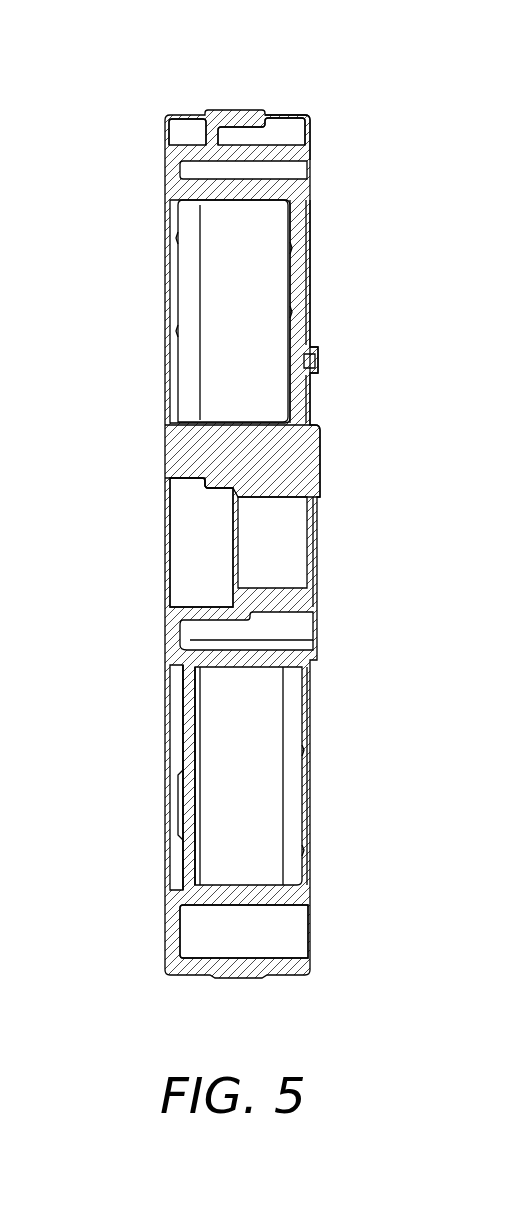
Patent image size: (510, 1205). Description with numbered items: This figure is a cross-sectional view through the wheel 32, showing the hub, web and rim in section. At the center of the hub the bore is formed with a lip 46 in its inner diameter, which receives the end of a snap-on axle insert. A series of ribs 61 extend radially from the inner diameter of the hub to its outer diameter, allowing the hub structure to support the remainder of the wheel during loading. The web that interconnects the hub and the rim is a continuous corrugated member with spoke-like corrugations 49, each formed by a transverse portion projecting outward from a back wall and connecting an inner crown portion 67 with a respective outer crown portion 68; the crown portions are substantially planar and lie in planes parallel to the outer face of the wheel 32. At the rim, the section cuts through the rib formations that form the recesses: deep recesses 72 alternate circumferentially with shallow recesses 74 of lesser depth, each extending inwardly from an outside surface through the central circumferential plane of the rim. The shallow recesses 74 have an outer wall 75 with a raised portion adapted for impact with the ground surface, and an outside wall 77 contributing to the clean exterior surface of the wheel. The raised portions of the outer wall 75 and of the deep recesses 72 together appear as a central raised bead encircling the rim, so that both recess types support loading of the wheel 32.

The wheel 32 is at (342, 94).
The outside wall 77 is at (205, 134).
The outer wall 75 is at (243, 133).
The shallow recess 74 is at (265, 136).
The corrugation 49 is at (310, 331).
The inner crown portion 67 is at (300, 396).
The rib 61 is at (270, 458).
The lip 46 is at (218, 488).
The outer crown portion 68 is at (183, 868).
The deep recess 72 is at (278, 927).